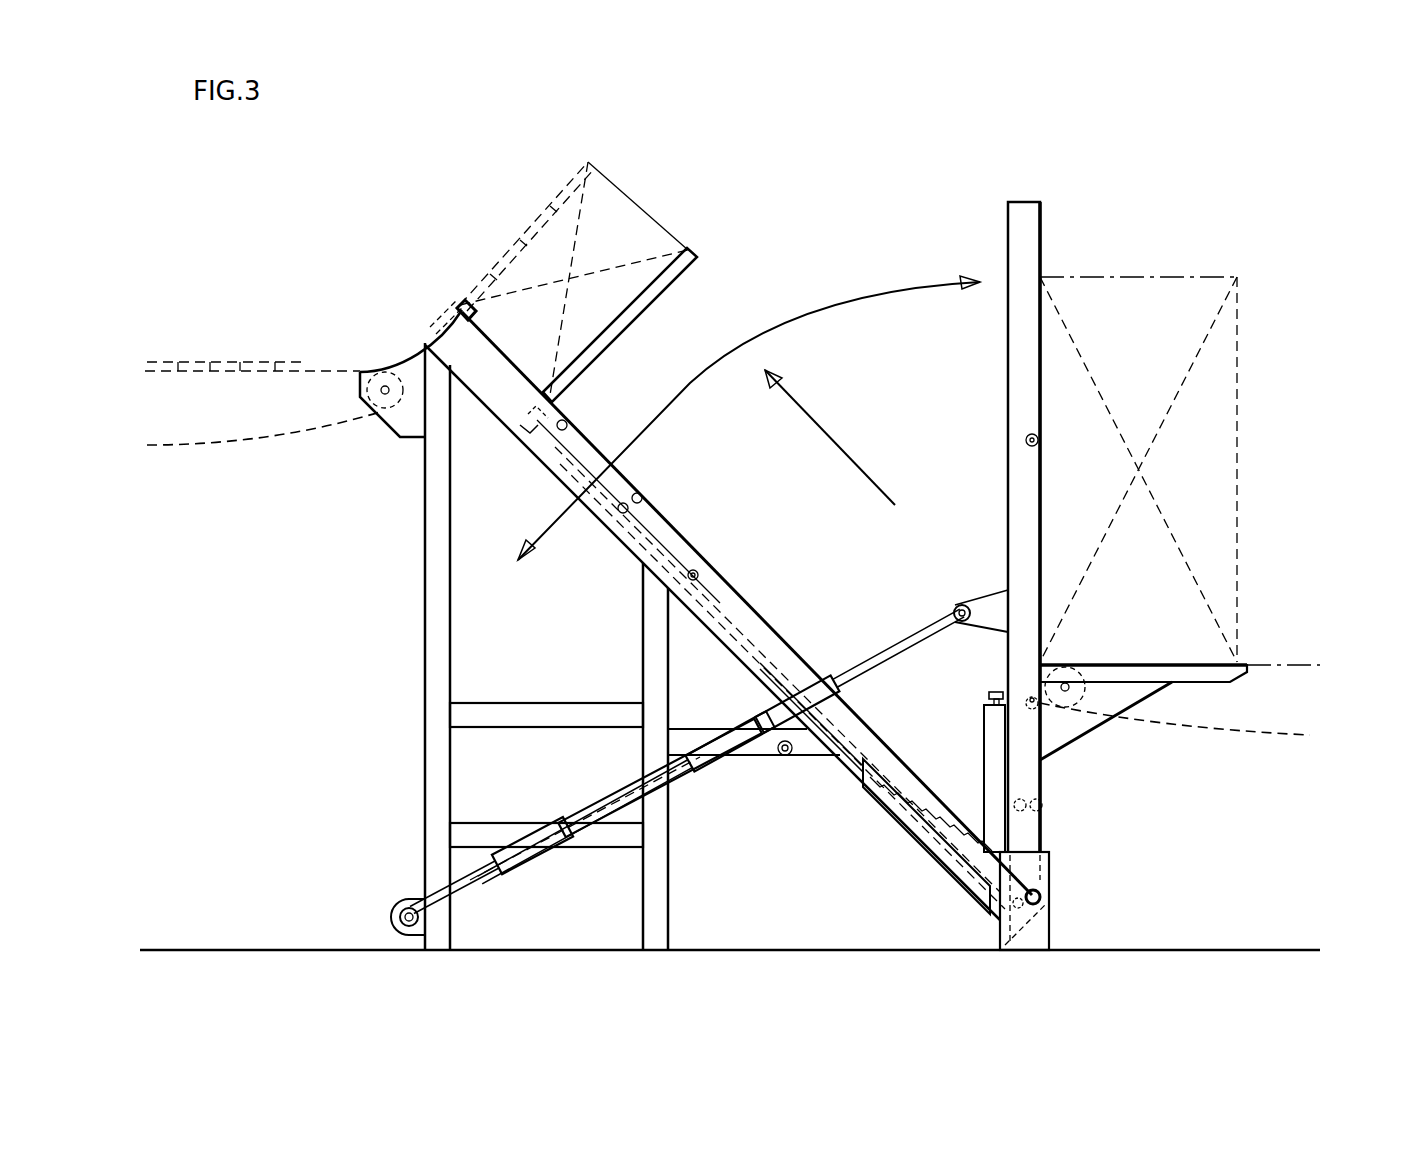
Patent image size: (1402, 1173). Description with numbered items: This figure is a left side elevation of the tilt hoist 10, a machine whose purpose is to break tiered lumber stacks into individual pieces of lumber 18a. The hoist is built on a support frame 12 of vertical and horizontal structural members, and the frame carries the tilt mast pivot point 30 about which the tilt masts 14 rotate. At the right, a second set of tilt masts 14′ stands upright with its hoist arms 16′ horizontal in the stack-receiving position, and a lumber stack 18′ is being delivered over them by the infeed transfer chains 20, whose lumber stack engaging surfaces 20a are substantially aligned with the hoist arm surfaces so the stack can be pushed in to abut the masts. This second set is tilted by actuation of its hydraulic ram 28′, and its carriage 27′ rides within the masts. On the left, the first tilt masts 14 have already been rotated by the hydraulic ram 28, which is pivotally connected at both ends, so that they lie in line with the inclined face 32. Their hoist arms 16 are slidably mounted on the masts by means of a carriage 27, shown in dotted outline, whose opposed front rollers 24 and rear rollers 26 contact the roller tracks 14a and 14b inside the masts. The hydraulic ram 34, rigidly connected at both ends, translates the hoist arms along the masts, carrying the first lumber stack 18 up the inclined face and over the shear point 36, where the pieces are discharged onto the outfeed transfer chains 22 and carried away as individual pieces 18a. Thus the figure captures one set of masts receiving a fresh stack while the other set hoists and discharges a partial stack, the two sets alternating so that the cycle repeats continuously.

The tilt hoist 10 is at (800, 157).
The support frame 12 is at (430, 717).
The tilt masts 14 is at (545, 410).
The second set of tilt masts 14′ is at (1022, 215).
The roller track 14a is at (1037, 447).
The roller track 14b is at (1008, 437).
The hoist arms 16 is at (628, 337).
The hoist arms 16′ is at (1130, 690).
The lumber stack 18 is at (625, 250).
The second lumber stack 18′ is at (1165, 600).
The individual pieces of lumber 18a is at (243, 362).
The infeed transfer chains 20 is at (1290, 667).
The lumber stack engaging surfaces 20a is at (1277, 665).
The outfeed transfer chains 22 is at (287, 372).
The front rollers 24 is at (625, 505).
The rear rollers 26 is at (693, 575).
The carriage 27 is at (556, 440).
The carriage 27′ is at (1040, 777).
The hydraulic ram 28 is at (556, 858).
The hydraulic ram 28′ is at (612, 792).
The tilt mast pivot point 30 is at (1045, 897).
The inclined face 32 is at (795, 680).
The hydraulic ram 34 is at (985, 760).
The shear point 36 is at (462, 300).